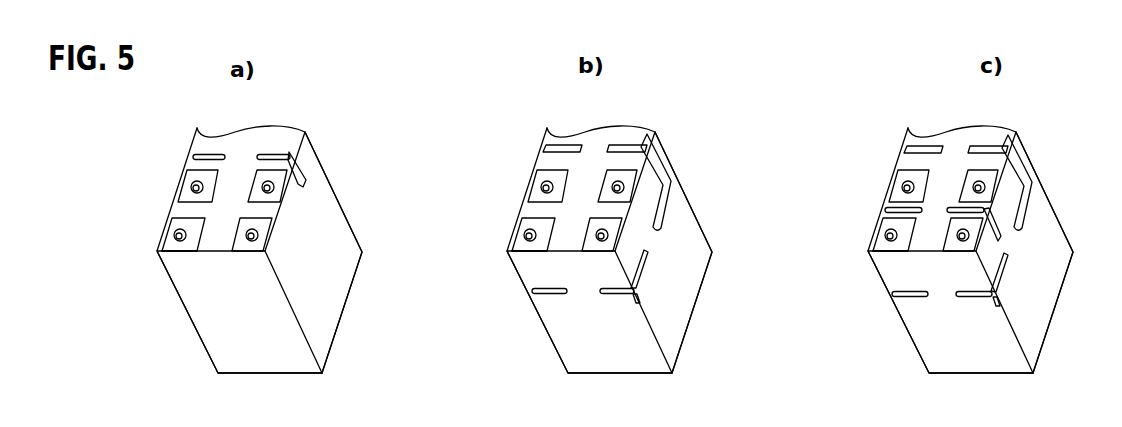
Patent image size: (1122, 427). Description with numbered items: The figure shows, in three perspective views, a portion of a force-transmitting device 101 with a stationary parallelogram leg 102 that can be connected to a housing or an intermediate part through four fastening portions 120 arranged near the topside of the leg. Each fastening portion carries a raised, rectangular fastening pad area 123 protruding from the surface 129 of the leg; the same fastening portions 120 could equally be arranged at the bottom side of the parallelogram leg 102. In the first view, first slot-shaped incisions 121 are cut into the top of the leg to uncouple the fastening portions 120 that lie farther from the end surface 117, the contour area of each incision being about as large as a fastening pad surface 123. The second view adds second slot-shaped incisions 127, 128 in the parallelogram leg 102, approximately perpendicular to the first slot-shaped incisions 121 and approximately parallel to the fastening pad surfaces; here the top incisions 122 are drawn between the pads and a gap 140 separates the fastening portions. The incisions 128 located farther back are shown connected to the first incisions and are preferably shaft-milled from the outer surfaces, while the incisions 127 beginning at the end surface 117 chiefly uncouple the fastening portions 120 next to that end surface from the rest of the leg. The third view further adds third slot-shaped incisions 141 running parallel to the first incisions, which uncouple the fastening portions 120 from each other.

The force-transmitting device 101 is at (294, 125).
The stationary parallelogram leg 102 is at (338, 275).
The end surface 117 is at (220, 332).
The fastening portions 120 is at (176, 183).
The first slot-shaped incisions 121 is at (195, 157).
The slot in housing top 122 is at (557, 150).
The fastening pad areas 123 is at (165, 247).
The second slot-shaped incisions 127 is at (533, 297).
The second slot-shaped incisions 128 is at (665, 200).
The surface 129 is at (233, 190).
The cross-shaped gap between terminals 140 is at (592, 150).
The third slot-shaped incisions 141 is at (888, 207).